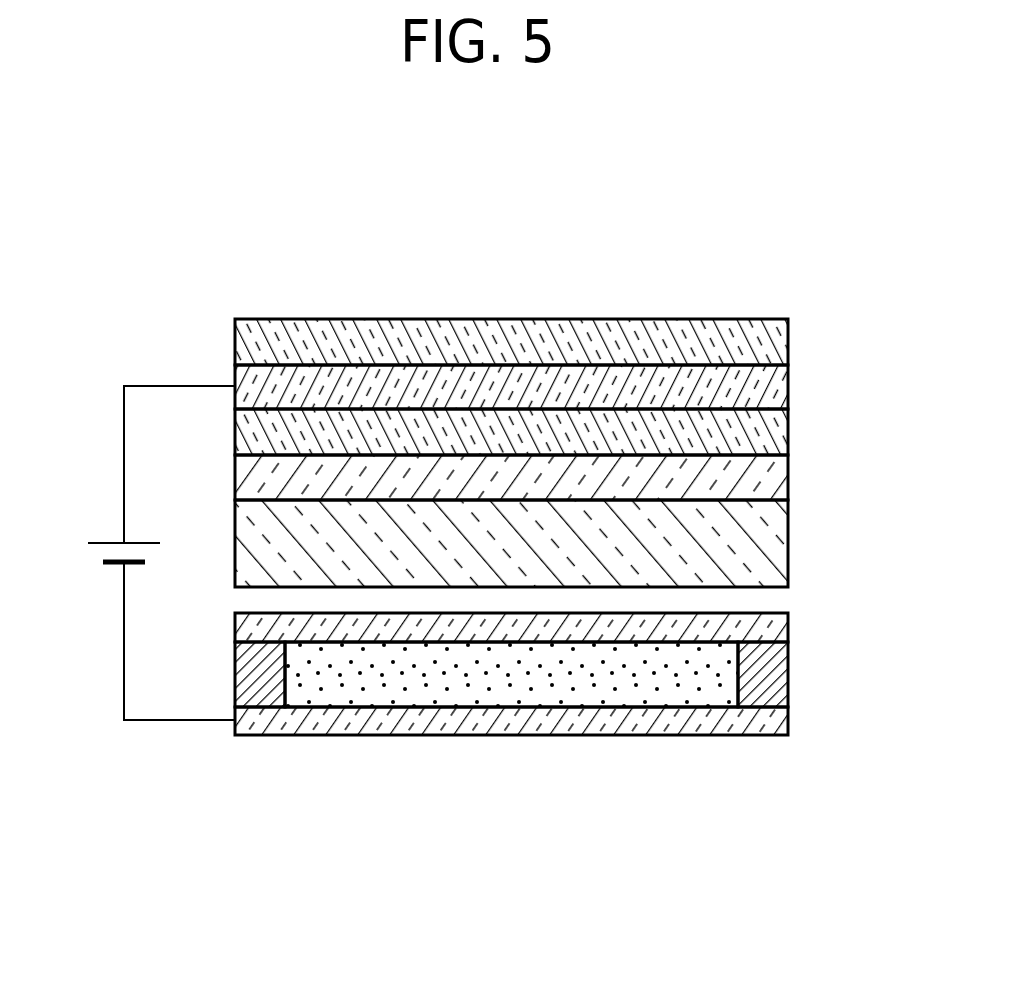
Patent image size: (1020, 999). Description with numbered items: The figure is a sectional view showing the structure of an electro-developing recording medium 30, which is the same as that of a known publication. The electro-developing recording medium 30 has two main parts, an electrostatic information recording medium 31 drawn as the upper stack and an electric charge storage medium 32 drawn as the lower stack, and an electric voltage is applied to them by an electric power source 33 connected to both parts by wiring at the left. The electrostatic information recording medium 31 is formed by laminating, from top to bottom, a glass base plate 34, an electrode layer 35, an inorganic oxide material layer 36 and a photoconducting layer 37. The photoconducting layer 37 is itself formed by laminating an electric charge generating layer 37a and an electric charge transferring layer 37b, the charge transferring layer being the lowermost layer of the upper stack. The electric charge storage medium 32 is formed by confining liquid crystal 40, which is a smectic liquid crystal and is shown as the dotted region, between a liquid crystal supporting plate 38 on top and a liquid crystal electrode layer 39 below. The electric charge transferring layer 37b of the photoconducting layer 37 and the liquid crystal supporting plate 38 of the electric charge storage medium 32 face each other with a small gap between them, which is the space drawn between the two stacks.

The electro-developing recording medium 30 is at (124, 741).
The electrostatic information recording medium 31 is at (571, 425).
The electric charge storage medium 32 is at (511, 737).
The electric power source 33 is at (115, 565).
The glass base plate 34 is at (692, 343).
The electrode layer 35 is at (455, 390).
The inorganic oxide material layer 36 is at (780, 432).
The photoconducting layer 37 is at (571, 528).
The electric charge generating layer 37a is at (773, 482).
The electric charge transferring layer 37b is at (571, 574).
The liquid crystal supporting plate 38 is at (427, 630).
The liquid crystal electrode layer 39 is at (710, 720).
The liquid crystal 40 is at (580, 673).